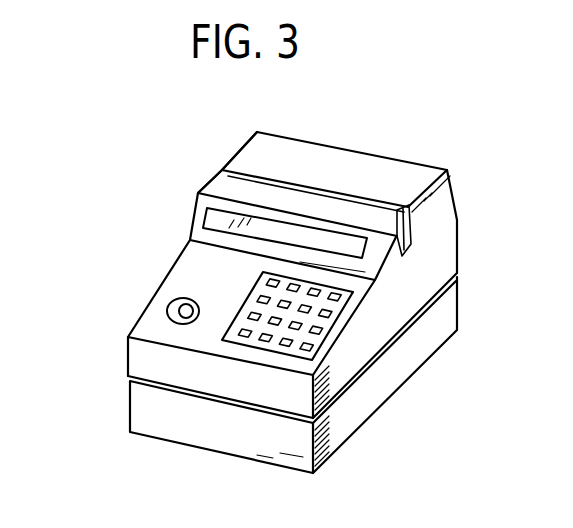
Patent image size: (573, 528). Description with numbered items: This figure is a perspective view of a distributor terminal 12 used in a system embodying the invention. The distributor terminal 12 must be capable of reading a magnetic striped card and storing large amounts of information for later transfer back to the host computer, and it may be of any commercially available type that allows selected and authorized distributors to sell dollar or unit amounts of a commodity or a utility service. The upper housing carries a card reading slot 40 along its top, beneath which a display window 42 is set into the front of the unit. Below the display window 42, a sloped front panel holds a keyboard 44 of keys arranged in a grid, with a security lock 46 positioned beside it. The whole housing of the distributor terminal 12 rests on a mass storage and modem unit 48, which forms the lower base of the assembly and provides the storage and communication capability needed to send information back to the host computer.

The distributor terminal 12 is at (163, 229).
The card reading slot 40 is at (222, 170).
The display window 42 is at (208, 220).
The keyboard 44 is at (338, 310).
The security lock 46 is at (167, 309).
The mass storage and modem unit 48 is at (152, 402).